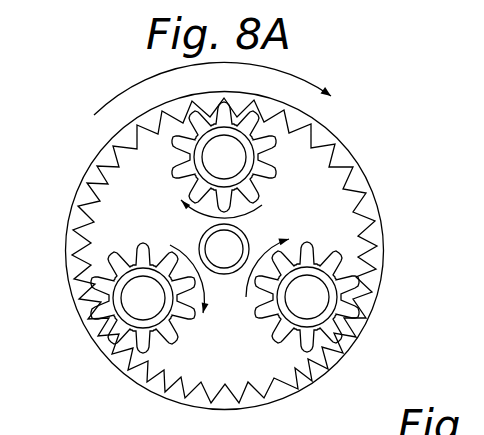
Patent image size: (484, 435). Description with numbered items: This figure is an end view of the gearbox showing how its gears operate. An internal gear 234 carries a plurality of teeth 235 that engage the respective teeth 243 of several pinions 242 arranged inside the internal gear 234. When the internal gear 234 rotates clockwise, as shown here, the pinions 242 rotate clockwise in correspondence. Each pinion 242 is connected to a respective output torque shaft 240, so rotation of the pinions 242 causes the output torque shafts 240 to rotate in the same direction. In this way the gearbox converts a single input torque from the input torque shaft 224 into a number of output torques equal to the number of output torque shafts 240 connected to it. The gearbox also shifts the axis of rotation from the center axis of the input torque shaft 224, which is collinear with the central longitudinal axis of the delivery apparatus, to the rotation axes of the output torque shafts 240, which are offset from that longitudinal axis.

The input torque shaft 224 is at (252, 240).
The internal gear 234 is at (346, 142).
The teeth 235 is at (97, 188).
The output torque shafts 240 is at (236, 158).
The pinions 242 is at (263, 136).
The teeth 243 is at (178, 142).